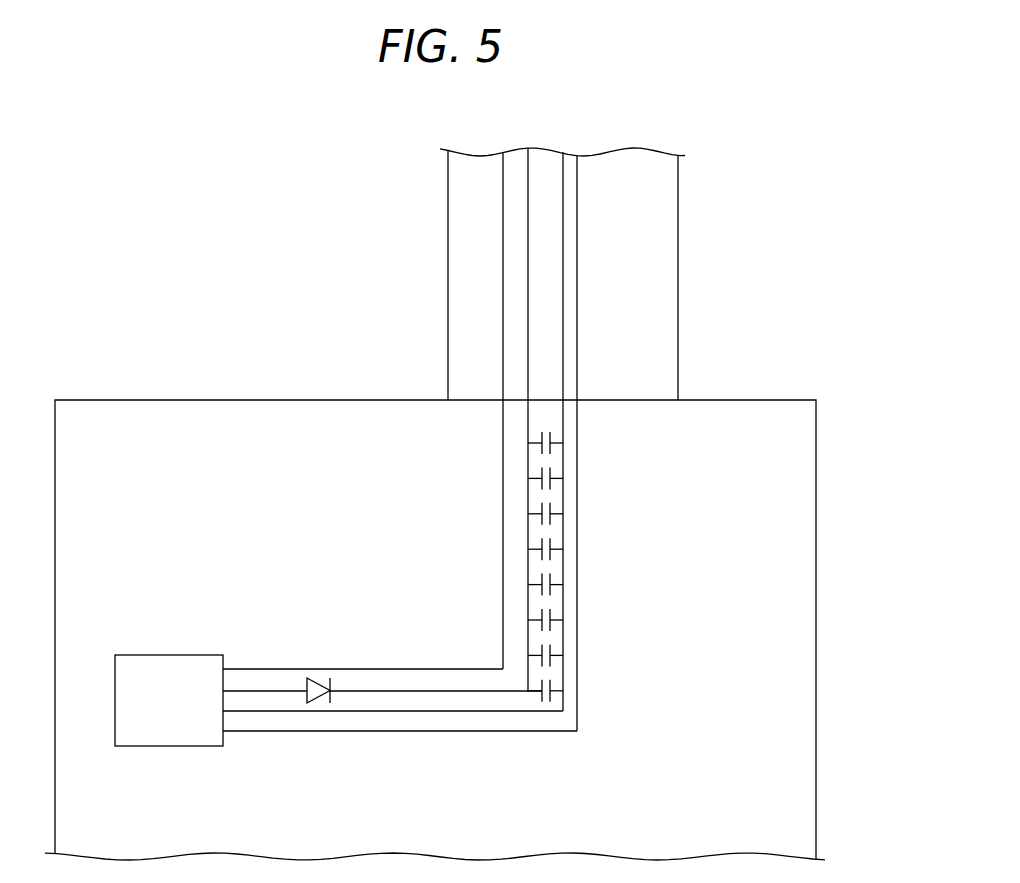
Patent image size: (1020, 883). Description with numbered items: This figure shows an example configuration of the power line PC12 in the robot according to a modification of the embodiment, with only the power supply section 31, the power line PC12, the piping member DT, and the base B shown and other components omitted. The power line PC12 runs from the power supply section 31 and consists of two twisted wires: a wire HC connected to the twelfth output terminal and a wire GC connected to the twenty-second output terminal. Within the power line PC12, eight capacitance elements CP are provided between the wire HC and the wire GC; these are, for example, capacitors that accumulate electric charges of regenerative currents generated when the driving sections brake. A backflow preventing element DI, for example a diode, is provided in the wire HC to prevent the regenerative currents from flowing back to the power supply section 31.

The piping member DT is at (678, 262).
The base B is at (782, 400).
The wire HC is at (528, 418).
The wire GC is at (565, 420).
The capacitance element CP is at (578, 448).
The power line PC12 is at (503, 517).
The power supply section 31 is at (172, 655).
The backflow preventing element DI is at (317, 658).